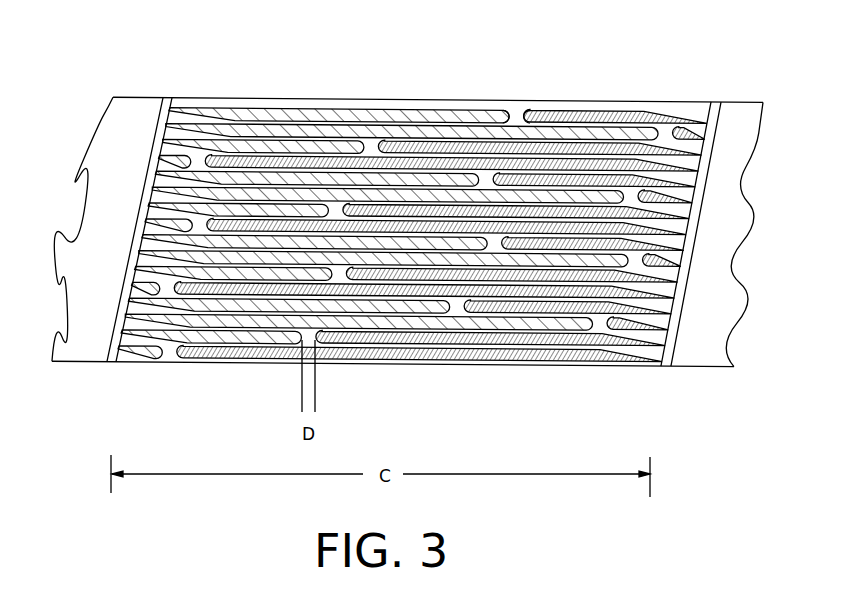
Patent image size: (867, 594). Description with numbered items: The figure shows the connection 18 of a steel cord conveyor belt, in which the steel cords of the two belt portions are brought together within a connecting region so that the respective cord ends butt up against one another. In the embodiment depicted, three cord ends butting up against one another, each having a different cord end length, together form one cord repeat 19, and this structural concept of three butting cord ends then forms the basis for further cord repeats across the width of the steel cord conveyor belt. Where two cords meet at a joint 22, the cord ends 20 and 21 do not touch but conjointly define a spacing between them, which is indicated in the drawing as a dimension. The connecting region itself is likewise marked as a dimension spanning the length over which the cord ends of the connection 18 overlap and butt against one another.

The connection 18 is at (433, 187).
The cord repeat 19 is at (716, 170).
The cord end 20 is at (531, 112).
The cord end 21 is at (505, 110).
The joint 22 is at (518, 113).